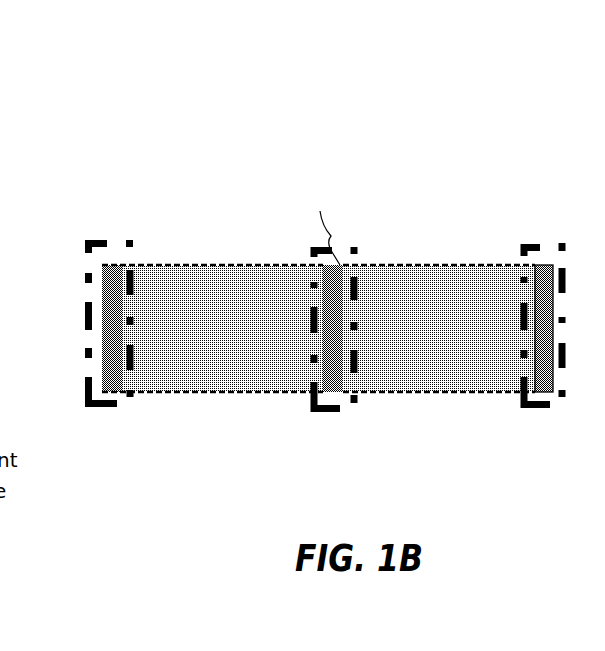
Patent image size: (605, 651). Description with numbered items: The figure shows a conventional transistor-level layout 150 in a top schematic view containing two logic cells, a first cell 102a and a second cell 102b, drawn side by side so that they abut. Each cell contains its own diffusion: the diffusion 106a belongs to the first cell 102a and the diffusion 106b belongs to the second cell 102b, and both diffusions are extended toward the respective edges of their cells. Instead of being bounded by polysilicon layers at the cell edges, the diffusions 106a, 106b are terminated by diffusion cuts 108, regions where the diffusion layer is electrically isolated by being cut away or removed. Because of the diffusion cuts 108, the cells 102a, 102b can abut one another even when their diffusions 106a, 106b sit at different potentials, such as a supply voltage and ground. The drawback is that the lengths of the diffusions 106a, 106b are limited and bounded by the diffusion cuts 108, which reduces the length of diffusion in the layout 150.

The layout 150 is at (107, 122).
The diffusion cut 108 is at (97, 242).
The cell 102a is at (173, 265).
The cell 102b is at (430, 265).
The diffusion 106a is at (235, 382).
The diffusion 106b is at (515, 383).